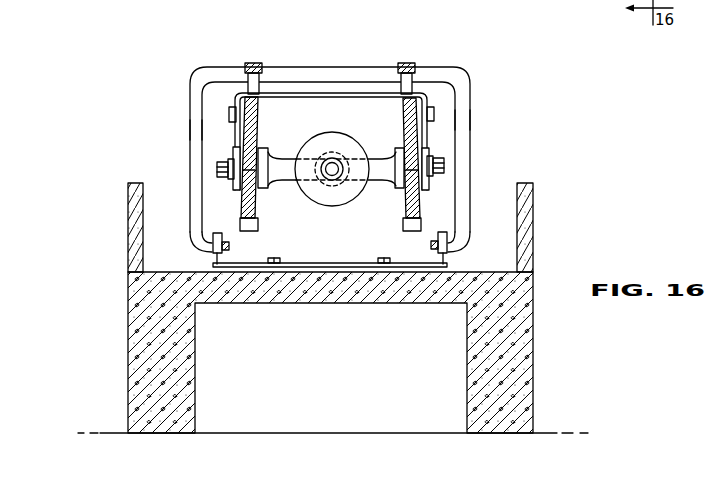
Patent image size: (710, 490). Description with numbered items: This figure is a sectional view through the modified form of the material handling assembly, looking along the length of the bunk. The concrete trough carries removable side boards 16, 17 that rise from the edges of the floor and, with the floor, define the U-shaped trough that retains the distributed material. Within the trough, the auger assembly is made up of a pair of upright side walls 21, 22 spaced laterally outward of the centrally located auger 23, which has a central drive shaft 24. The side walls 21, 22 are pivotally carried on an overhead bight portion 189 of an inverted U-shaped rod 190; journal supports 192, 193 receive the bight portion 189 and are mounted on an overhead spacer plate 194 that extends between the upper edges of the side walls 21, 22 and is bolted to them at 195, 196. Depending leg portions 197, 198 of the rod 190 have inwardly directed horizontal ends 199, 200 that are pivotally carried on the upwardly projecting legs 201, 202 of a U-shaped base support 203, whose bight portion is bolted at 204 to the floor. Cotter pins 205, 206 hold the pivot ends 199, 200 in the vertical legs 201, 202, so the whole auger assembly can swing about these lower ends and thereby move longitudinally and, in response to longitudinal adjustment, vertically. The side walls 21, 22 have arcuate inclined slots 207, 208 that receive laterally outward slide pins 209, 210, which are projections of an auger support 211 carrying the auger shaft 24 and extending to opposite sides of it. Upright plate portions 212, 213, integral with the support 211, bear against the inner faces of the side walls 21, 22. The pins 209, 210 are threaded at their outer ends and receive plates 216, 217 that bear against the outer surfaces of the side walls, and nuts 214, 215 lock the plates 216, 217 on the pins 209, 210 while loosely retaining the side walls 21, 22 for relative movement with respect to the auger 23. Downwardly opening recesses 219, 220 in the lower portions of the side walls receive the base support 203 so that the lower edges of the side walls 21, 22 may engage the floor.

The side board 16 is at (127, 246).
The side board 17 is at (532, 223).
The side wall 21 is at (256, 116).
The side wall 22 is at (405, 112).
The auger 23 is at (318, 142).
The drive shaft 24 is at (339, 154).
The bight portion 189 is at (361, 74).
The inverted U-shaped rod 190 is at (327, 73).
The journal support 192 is at (260, 63).
The journal support 193 is at (408, 63).
The spacer plate 194 is at (356, 95).
The bolt 195 is at (230, 113).
The bolt 196 is at (442, 99).
The leg portion 197 is at (190, 126).
The leg portion 198 is at (468, 123).
The horizontal end 199 is at (229, 243).
The horizontal end 200 is at (430, 249).
The upwardly projecting leg 201 is at (216, 260).
The upwardly projecting leg 202 is at (446, 262).
The base support 203 is at (322, 258).
The bolt 204 is at (276, 258).
The cotter pin 205 is at (203, 247).
The cotter pin 206 is at (458, 246).
The inclined slot 207 is at (259, 202).
The inclined slot 208 is at (400, 206).
The slide pin 209 is at (217, 168).
The slide pin 210 is at (445, 165).
The auger support 211 is at (385, 171).
The upright plate portion 212 is at (268, 152).
The upright plate portion 213 is at (394, 153).
The nut 214 is at (229, 181).
The nut 215 is at (445, 178).
The plate 216 is at (236, 150).
The plate 217 is at (426, 146).
The recess 219 is at (254, 228).
The recess 220 is at (404, 229).